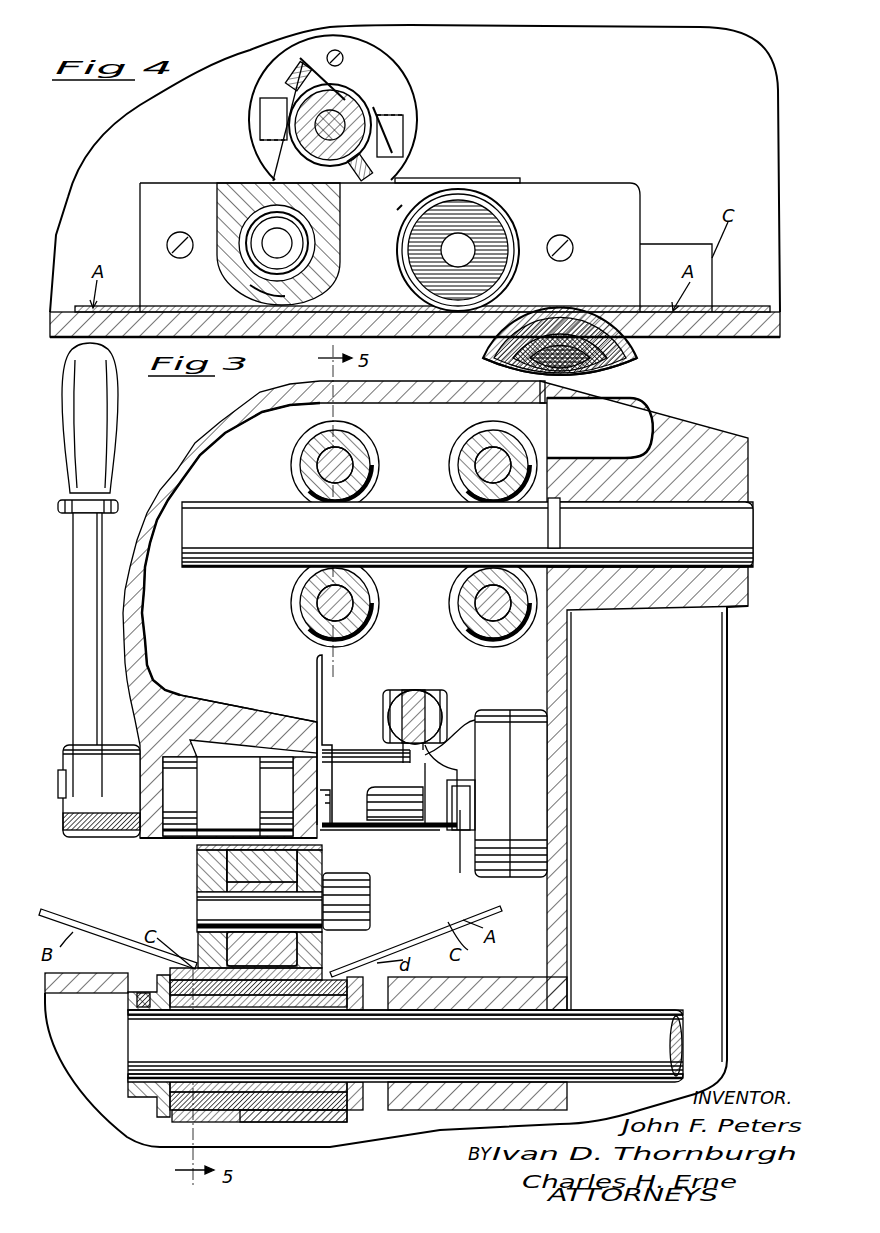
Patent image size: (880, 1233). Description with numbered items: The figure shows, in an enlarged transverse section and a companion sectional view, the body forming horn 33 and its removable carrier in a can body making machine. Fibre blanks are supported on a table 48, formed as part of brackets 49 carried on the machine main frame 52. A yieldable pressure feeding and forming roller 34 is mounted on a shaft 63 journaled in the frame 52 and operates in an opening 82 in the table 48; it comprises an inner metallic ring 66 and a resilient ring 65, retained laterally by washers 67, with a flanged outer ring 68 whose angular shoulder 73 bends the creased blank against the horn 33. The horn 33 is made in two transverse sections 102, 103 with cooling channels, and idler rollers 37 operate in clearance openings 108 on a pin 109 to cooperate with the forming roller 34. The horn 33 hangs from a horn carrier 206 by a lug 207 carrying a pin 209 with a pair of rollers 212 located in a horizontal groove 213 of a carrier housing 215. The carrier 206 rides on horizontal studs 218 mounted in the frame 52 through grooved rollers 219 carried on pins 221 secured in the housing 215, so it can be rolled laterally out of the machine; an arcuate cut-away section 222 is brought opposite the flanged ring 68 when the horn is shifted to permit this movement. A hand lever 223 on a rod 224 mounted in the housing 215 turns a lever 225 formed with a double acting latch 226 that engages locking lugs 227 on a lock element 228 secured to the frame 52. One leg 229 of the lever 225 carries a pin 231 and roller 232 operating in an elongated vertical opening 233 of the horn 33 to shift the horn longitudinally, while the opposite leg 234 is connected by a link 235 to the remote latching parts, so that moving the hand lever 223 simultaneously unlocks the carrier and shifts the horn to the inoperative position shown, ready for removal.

In FIG. 4, the body forming horn 33 is at (493, 223).
In FIG. 3, the body forming horn 33 is at (242, 950).
In FIG. 4, the pressure feeding and forming roller 34 is at (500, 345).
In FIG. 3, the pressure feeding and forming roller 34 is at (173, 1117).
In FIG. 4, the idler roller 37 is at (475, 200).
In FIG. 3, the idler roller 37 is at (207, 873).
In FIG. 4, the table 48 is at (745, 330).
In FIG. 3, the table 48 is at (102, 980).
In FIG. 3, the bracket 49 is at (80, 1063).
In FIG. 4, the machine main frame 52 is at (764, 160).
In FIG. 3, the machine main frame 52 is at (708, 667).
In FIG. 4, the shaft 63 is at (577, 373).
In FIG. 3, the shaft 63 is at (405, 1046).
In FIG. 4, the resilient ring 65 is at (620, 367).
In FIG. 3, the resilient ring 65 is at (277, 1087).
In FIG. 4, the inner metallic ring 66 is at (520, 370).
In FIG. 3, the inner metallic ring 66 is at (227, 1073).
In FIG. 3, the washer 67 is at (147, 1088).
In FIG. 4, the outer ring 68 is at (613, 350).
In FIG. 3, the outer ring 68 is at (298, 1123).
In FIG. 3, the shoulder 73 is at (192, 1130).
In FIG. 3, the opening 82 is at (147, 982).
In FIG. 3, the horn transverse section 102 is at (253, 862).
In FIG. 3, the horn transverse section 103 is at (277, 862).
In FIG. 4, the clearance opening 108 is at (522, 242).
In FIG. 3, the clearance opening 108 is at (197, 850).
In FIG. 4, the pin 109 is at (470, 252).
In FIG. 3, the pin 109 is at (217, 903).
In FIG. 3, the horn carrier 206 is at (334, 609).
In FIG. 4, the lug 207 is at (427, 182).
In FIG. 3, the lug 207 is at (228, 796).
In FIG. 3, the pin 209 is at (170, 790).
In FIG. 3, the roller 212 is at (229, 793).
In FIG. 3, the horizontal groove 213 is at (165, 832).
In FIG. 3, the carrier housing 215 is at (138, 630).
In FIG. 3, the stud 218 is at (467, 532).
In FIG. 3, the grooved roller 219 is at (472, 437).
In FIG. 3, the pin 221 is at (483, 465).
In FIG. 4, the arcuate cut-away section 222 is at (554, 323).
In FIG. 3, the hand lever 223 is at (88, 575).
In FIG. 4, the rod 224 is at (317, 127).
In FIG. 3, the rod 224 is at (58, 788).
In FIG. 4, the lever 225 is at (373, 112).
In FIG. 3, the lever 225 is at (400, 828).
In FIG. 4, the double acting latch 226 is at (307, 68).
In FIG. 3, the double acting latch 226 is at (460, 817).
In FIG. 4, the locking lug 227 is at (273, 110).
In FIG. 3, the locking lug 227 is at (447, 808).
In FIG. 4, the lock element 228 is at (357, 73).
In FIG. 3, the lock element 228 is at (495, 727).
In FIG. 4, the leg 229 is at (297, 173).
In FIG. 3, the leg 229 is at (355, 860).
In FIG. 4, the pin 231 is at (280, 240).
In FIG. 3, the pin 231 is at (373, 900).
In FIG. 4, the roller 232 is at (290, 260).
In FIG. 4, the elongated vertical opening 233 is at (270, 290).
In FIG. 4, the leg 234 is at (362, 100).
In FIG. 3, the leg 234 is at (400, 752).
In FIG. 3, the link 235 is at (435, 700).